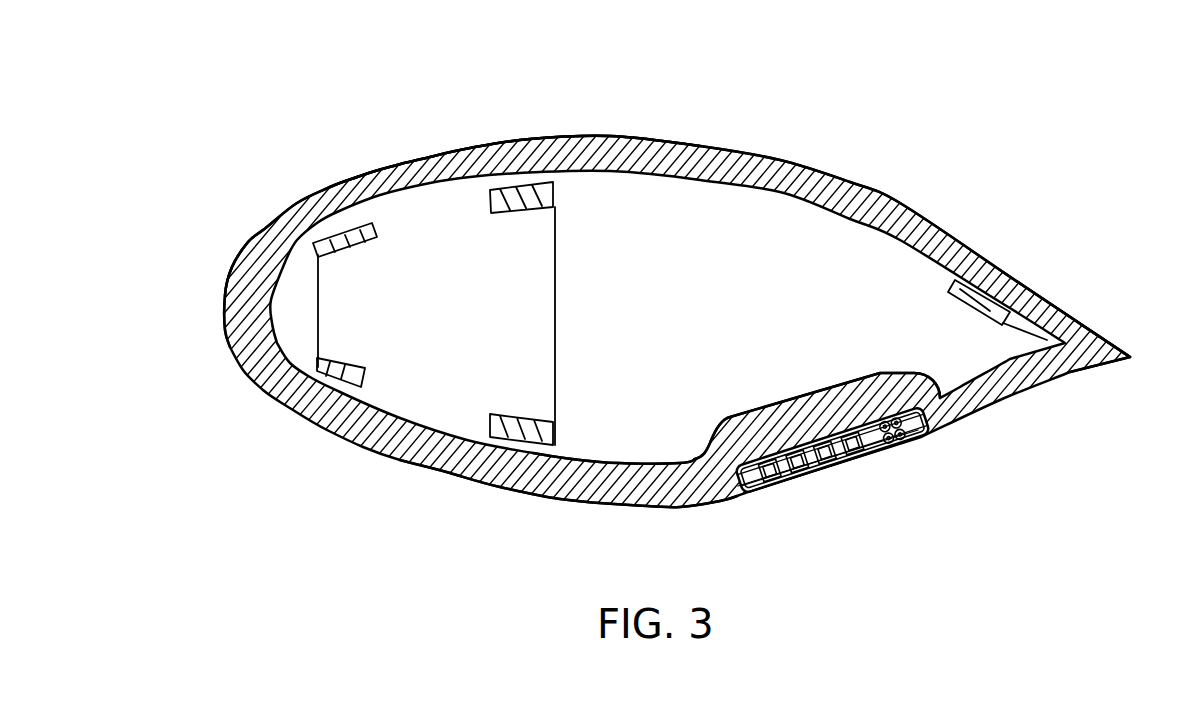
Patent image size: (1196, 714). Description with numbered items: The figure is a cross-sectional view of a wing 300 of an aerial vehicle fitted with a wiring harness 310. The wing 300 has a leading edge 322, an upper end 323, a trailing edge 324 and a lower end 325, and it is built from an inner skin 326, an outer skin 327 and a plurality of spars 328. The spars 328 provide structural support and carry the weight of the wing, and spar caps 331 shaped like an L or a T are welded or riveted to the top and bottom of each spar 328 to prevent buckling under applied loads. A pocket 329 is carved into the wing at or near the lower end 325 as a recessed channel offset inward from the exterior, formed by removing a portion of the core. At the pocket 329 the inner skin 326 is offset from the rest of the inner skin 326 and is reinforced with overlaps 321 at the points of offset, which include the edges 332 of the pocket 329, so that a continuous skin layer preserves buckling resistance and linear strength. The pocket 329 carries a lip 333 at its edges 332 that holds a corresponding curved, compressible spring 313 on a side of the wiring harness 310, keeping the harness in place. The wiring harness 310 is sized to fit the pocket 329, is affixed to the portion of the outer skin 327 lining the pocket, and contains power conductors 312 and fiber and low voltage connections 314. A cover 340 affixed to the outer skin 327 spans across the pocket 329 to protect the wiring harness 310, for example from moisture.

The wing 300 is at (862, 92).
The wiring harness 310 is at (825, 452).
The power conductors 312 is at (796, 455).
The springs 313 is at (775, 490).
The fiber and low voltage connections 314 is at (887, 424).
The overlaps 321 is at (702, 500).
The leading edge 322 is at (227, 310).
The upper end 323 is at (487, 143).
The trailing edge 324 is at (1132, 357).
The lower end 325 is at (935, 435).
The inner skin 326 is at (550, 483).
The outer skin 327 is at (618, 507).
The spars 328 is at (318, 295).
The pocket 329 is at (875, 455).
The spar caps 331 is at (350, 237).
The edges 332 is at (745, 493).
The lip 333 is at (740, 502).
The cover 340 is at (843, 477).